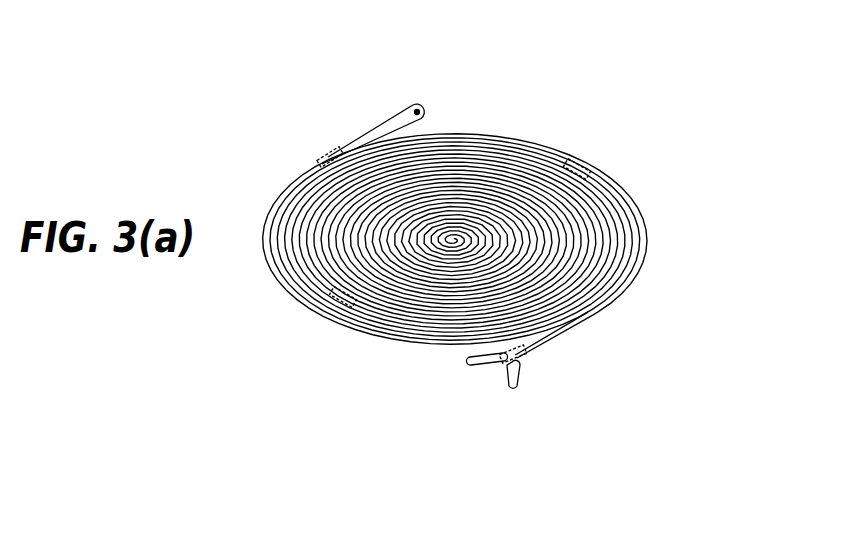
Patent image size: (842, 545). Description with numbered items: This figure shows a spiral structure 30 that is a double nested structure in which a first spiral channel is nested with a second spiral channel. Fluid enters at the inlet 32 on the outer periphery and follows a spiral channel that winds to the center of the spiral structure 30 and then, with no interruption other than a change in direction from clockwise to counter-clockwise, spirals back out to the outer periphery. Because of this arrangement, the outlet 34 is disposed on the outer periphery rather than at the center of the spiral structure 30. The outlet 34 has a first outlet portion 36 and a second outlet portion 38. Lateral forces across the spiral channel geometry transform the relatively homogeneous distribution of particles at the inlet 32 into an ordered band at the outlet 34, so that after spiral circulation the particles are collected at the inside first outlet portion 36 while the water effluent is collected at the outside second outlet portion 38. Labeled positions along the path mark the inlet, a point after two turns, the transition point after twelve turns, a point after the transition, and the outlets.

The spiral structure 30 is at (605, 103).
The inlet 32 is at (414, 108).
The outlet 34 is at (501, 388).
The first outlet portion 36 is at (470, 361).
The second outlet portion 38 is at (509, 386).